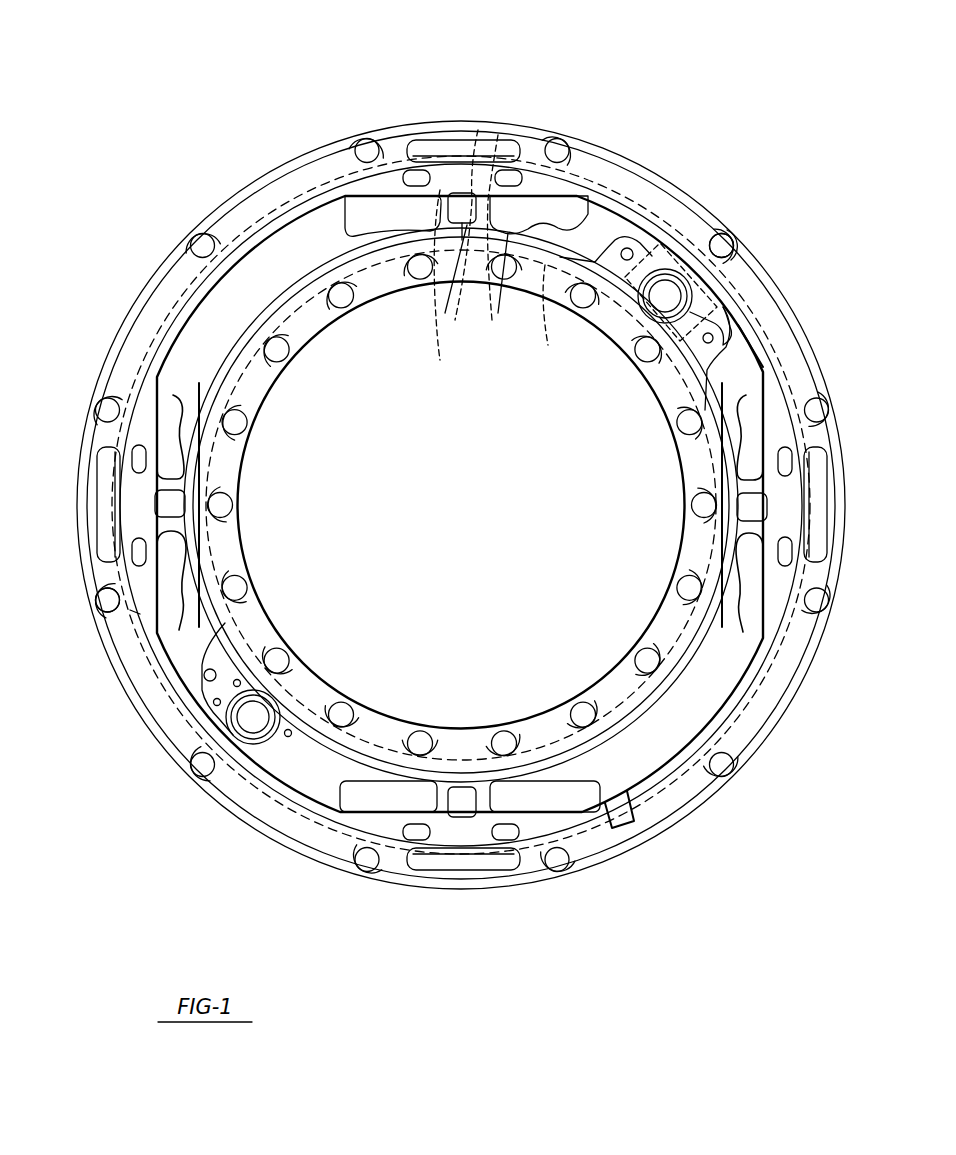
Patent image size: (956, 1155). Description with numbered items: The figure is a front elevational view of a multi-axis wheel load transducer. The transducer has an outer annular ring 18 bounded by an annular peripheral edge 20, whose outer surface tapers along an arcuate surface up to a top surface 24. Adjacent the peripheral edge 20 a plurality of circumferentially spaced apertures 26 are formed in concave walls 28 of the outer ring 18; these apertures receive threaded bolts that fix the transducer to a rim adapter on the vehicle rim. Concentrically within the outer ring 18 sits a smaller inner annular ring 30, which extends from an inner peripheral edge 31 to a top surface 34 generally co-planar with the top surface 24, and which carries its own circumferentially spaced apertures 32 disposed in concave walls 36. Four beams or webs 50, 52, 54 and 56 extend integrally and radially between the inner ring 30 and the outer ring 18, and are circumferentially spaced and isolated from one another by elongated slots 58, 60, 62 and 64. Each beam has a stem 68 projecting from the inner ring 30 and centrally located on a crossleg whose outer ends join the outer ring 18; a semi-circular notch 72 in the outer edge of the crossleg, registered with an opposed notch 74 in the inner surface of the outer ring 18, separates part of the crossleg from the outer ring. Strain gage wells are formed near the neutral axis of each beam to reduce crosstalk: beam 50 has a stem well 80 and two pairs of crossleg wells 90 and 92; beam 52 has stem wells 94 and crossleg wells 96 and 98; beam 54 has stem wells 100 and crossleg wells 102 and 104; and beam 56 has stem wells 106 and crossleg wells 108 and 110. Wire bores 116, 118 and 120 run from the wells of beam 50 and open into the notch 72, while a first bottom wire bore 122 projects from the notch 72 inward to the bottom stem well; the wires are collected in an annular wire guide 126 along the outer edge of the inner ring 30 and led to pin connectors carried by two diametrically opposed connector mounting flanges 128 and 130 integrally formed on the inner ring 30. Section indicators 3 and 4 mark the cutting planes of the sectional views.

The section line 3- 3 is at (463, 190).
The section line 4- 4 is at (143, 323).
The outer annular ring 18 is at (655, 190).
The annular peripheral edge 20 is at (725, 210).
The top surface 24 is at (300, 207).
The apertures 26 is at (125, 612).
The concave walls 28 is at (130, 610).
The inner annular ring 30 is at (368, 338).
The inner peripheral edge 31 is at (243, 473).
The apertures 32 is at (232, 503).
The top surface 34 is at (318, 273).
The concave walls 36 is at (218, 522).
The beam 50 is at (582, 152).
The beam 52 is at (745, 415).
The beam 54 is at (545, 817).
The beam 56 is at (173, 470).
The elongated slot 58 is at (757, 320).
The elongated slot 60 is at (615, 820).
The elongated slot 62 is at (207, 630).
The elongated slot 64 is at (337, 193).
The stem 68 is at (488, 217).
The notch 72 is at (452, 290).
The opposed notch 74 is at (420, 145).
The well 80 is at (470, 295).
The wells 90 is at (408, 140).
The wells 92 is at (548, 160).
The stem wells 94 is at (745, 605).
The crossleg wells 96 is at (815, 400).
The crossleg wells 98 is at (812, 615).
The stem wells 100 is at (463, 827).
The crossleg wells 102 is at (483, 836).
The crossleg wells 104 is at (413, 832).
The stem wells 106 is at (200, 530).
The crossleg wells 108 is at (148, 553).
The crossleg wells 110 is at (138, 445).
The wire bore 116 is at (498, 135).
The wire bore 118 is at (427, 197).
The wire bore 120 is at (478, 130).
The first bottom wire bore 122 is at (478, 280).
The wire guide 126 is at (543, 300).
The connector mounting flange 128 is at (712, 238).
The connector mounting flange 130 is at (690, 290).